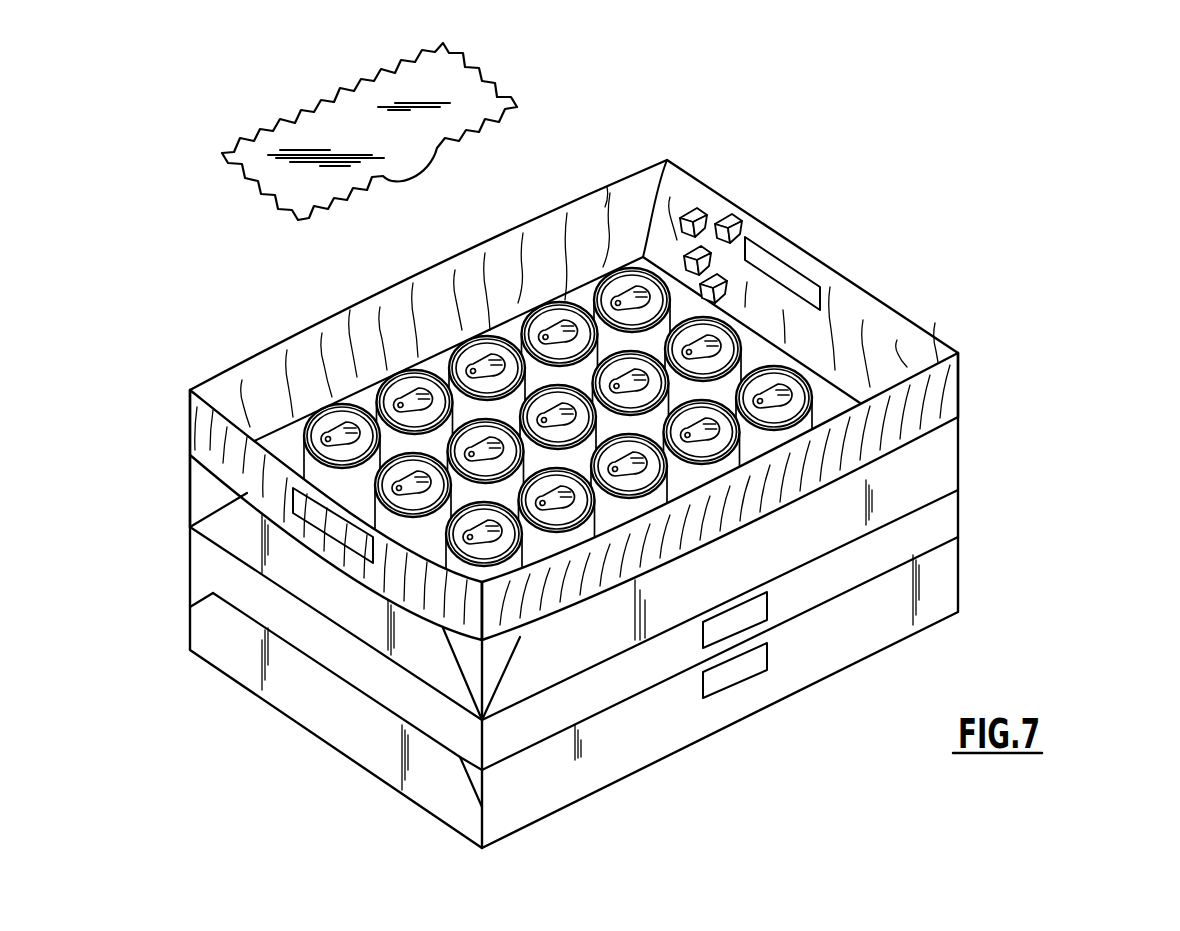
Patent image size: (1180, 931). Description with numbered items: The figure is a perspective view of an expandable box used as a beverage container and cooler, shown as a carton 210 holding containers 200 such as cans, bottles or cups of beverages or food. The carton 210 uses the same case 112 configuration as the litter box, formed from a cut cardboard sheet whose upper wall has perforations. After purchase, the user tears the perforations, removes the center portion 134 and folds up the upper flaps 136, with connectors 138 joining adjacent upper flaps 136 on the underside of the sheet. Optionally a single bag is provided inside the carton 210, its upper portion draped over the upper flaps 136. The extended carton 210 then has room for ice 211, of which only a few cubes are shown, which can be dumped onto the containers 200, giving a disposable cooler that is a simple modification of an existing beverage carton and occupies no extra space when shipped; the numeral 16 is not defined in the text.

The center portion 134 is at (510, 103).
The ice 211 is at (737, 226).
The containers 200 is at (392, 404).
The connectors 138 is at (189, 468).
The container 16 is at (240, 496).
The upper flaps 136 is at (363, 618).
The case 112 is at (960, 508).
The carton 210 is at (1018, 568).